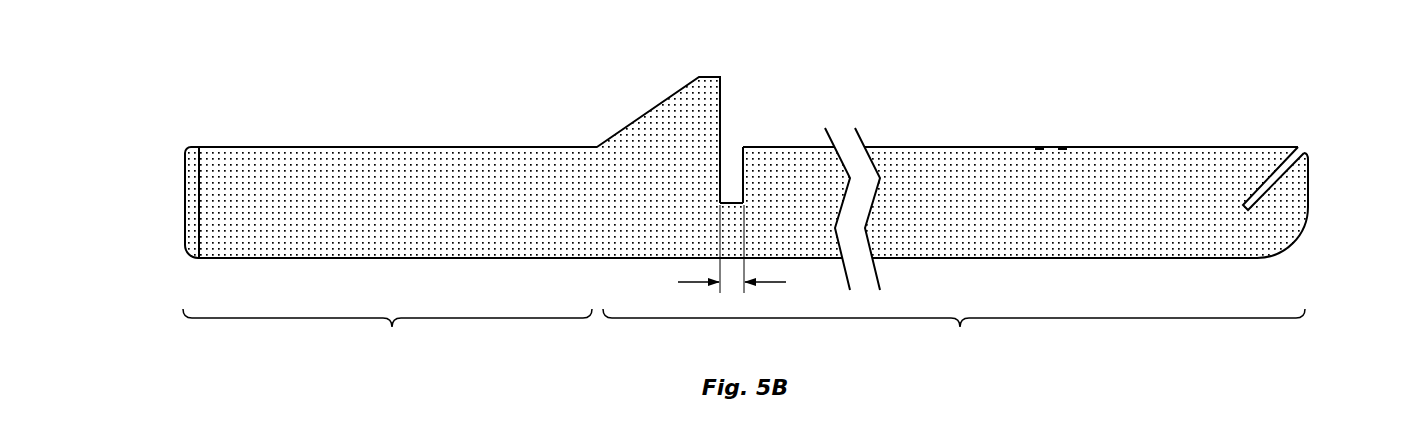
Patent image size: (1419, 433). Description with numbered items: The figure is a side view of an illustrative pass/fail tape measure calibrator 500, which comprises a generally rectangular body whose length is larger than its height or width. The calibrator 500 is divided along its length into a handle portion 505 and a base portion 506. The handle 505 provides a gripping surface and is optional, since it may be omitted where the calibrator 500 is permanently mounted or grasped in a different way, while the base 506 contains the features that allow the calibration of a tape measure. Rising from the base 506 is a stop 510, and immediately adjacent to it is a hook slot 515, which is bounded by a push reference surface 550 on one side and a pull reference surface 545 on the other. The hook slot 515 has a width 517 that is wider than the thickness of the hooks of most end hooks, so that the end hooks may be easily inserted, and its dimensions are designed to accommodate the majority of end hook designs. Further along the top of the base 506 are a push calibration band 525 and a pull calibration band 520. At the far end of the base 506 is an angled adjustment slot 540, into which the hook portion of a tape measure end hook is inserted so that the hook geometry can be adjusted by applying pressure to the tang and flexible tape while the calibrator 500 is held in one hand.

The pass/fail tape measure calibrator 500 is at (213, 71).
The handle portion 505 is at (382, 133).
The base portion 506 is at (1040, 246).
The stop 510 is at (690, 103).
The hook slot 515 is at (735, 145).
The width of the hook slot 517 is at (752, 250).
The pull calibration band 520 is at (1063, 146).
The push calibration band 525 is at (1038, 146).
The adjustment slot 540 is at (1298, 151).
The pull reference surface 545 is at (748, 164).
The push reference surface 550 is at (716, 172).